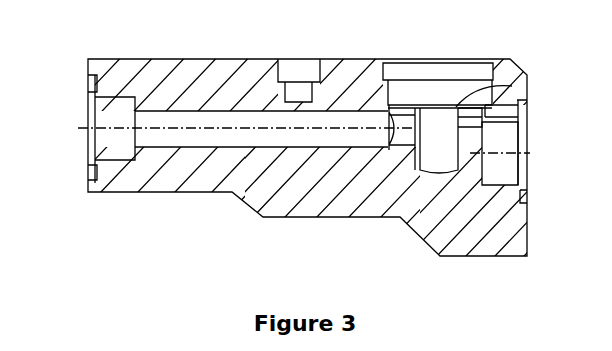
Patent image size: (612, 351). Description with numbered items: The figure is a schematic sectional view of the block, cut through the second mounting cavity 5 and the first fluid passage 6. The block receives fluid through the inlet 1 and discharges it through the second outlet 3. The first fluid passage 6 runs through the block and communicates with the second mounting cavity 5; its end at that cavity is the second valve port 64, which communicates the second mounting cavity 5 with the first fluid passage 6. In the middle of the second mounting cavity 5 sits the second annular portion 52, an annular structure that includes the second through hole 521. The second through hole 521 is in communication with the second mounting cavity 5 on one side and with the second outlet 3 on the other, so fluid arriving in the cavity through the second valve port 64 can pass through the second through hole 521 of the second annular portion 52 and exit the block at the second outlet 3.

The inlet 1 is at (92, 98).
The second outlet 3 is at (523, 152).
The second mounting cavity 5 is at (408, 92).
The second annular portion 52 is at (438, 137).
The second through hole 521 is at (485, 118).
The first fluid passage 6 is at (150, 138).
The second valve port 64 is at (395, 122).